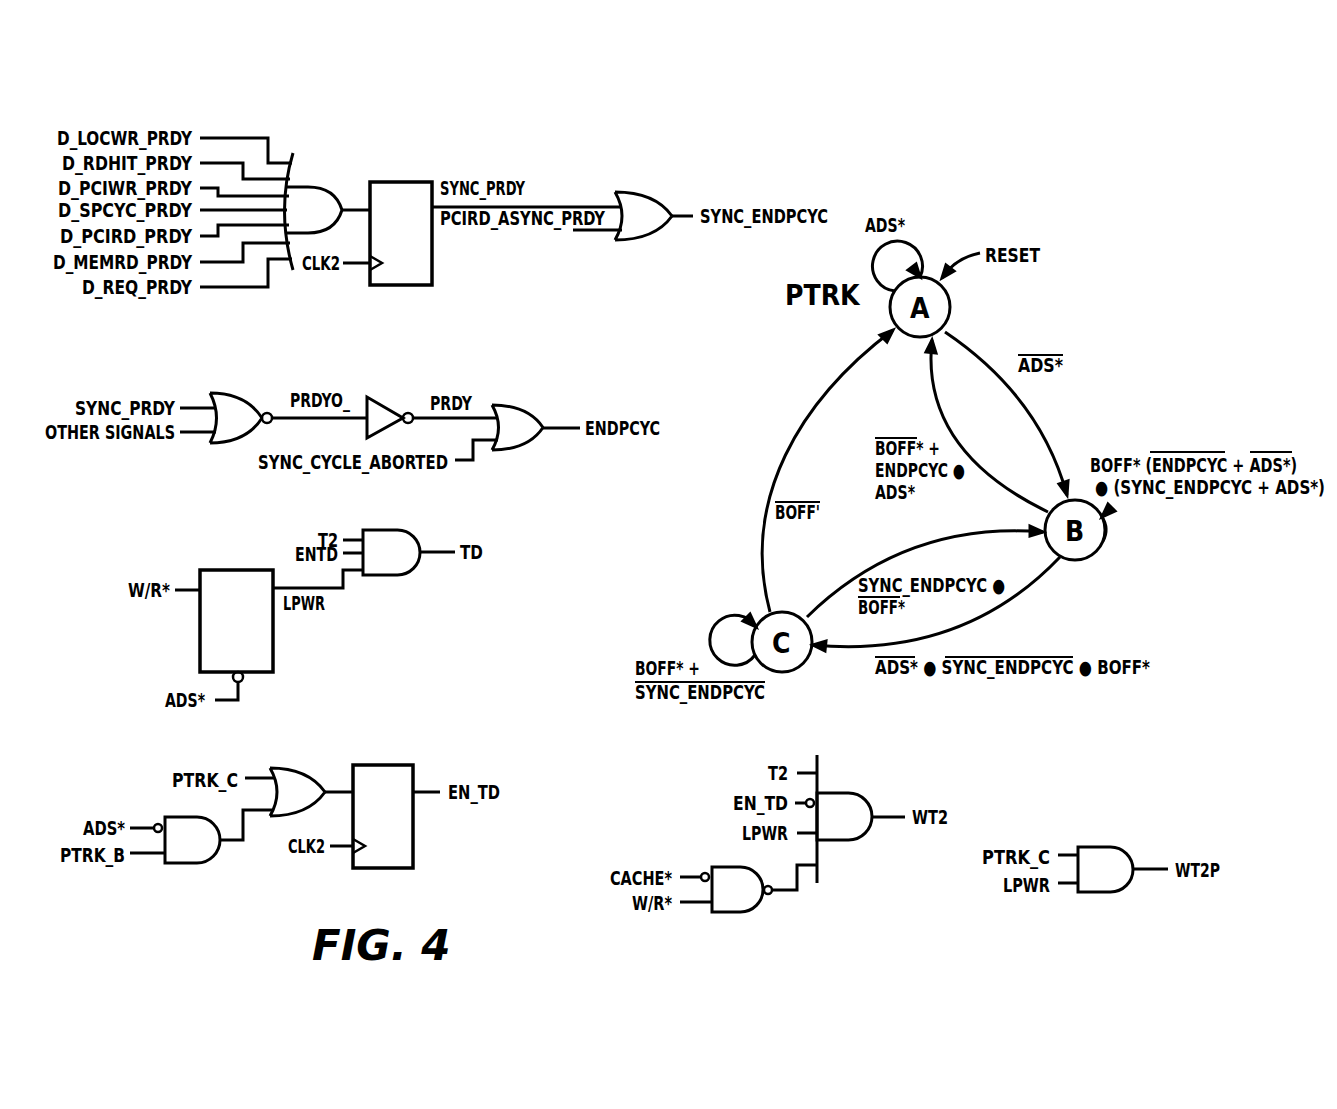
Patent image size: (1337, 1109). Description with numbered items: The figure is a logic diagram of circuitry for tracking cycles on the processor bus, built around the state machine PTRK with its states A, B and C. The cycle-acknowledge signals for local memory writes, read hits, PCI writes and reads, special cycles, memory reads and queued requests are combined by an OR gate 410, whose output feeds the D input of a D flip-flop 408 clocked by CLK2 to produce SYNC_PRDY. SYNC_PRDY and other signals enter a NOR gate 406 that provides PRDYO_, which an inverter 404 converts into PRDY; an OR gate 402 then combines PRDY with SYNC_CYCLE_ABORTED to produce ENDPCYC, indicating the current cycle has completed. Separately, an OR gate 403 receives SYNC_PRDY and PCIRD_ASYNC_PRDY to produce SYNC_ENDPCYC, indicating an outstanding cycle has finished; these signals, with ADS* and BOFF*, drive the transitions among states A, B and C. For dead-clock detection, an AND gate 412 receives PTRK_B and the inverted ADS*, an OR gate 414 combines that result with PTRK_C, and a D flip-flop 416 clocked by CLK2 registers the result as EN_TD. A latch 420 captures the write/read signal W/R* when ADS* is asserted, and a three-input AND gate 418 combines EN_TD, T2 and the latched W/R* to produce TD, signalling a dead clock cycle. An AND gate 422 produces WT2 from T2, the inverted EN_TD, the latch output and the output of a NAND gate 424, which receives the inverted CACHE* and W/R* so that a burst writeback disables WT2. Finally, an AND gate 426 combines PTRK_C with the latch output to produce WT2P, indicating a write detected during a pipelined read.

The OR gate 402 is at (540, 409).
The OR gate 403 is at (657, 201).
The inverter 404 is at (409, 402).
The NOR gate 406 is at (260, 401).
The D flip-flop 408 is at (420, 214).
The OR gate 410 is at (327, 210).
The AND gate 412 is at (206, 856).
The OR gate 414 is at (310, 776).
The D flip-flop 416 is at (404, 798).
The three-input AND gate 418 is at (409, 535).
The latch 420 is at (218, 611).
The AND gate 422 is at (857, 801).
The NAND gate 424 is at (753, 906).
The AND gate 426 is at (1124, 853).